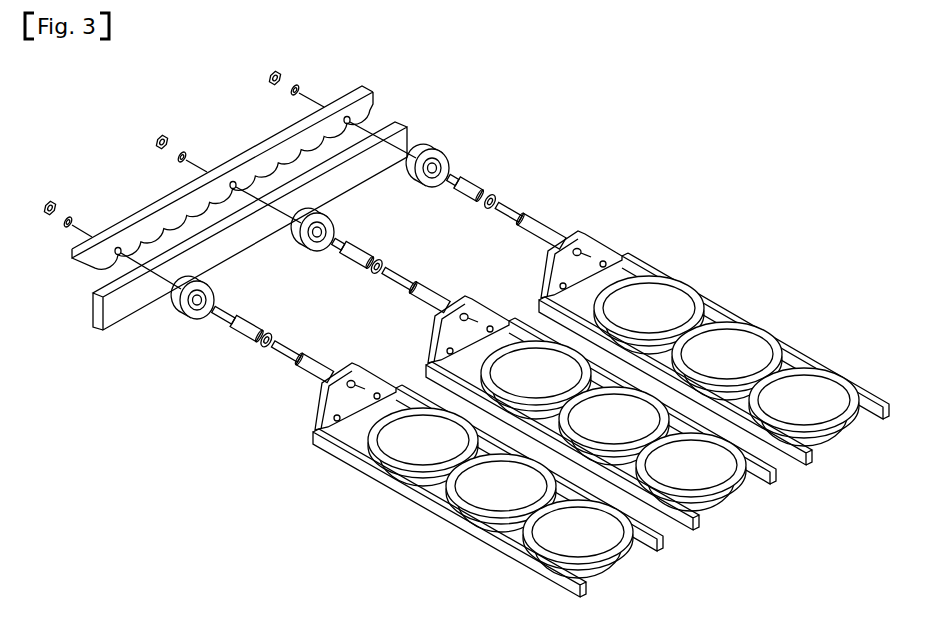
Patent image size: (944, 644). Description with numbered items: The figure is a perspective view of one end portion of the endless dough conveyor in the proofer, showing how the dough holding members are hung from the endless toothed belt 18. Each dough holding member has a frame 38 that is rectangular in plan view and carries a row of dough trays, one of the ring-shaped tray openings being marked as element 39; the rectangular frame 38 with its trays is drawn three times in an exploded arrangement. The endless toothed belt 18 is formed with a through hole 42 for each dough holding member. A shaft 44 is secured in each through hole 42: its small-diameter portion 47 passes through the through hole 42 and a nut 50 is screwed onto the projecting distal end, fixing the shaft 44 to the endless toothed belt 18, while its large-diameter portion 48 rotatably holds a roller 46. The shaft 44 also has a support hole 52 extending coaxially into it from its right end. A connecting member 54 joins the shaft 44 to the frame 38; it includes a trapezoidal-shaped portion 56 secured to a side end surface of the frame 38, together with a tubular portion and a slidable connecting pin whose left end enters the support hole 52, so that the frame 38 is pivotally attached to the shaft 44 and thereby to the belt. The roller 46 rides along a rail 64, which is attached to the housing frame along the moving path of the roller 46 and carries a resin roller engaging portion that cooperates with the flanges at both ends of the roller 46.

The endless toothed belt 18 is at (362, 97).
The frame 38 is at (556, 576).
The cup holder ring 39 is at (848, 382).
The through hole 42 is at (230, 184).
The shaft 44 is at (476, 187).
The roller 46 is at (426, 150).
The small-diameter portion 47 is at (351, 246).
The large-diameter portion 48 is at (379, 262).
The nut 50 is at (157, 139).
The support hole 52 is at (500, 202).
The connecting member 54 is at (546, 224).
The trapezoidal-shaped portion 56 is at (579, 233).
The rail 64 is at (145, 300).